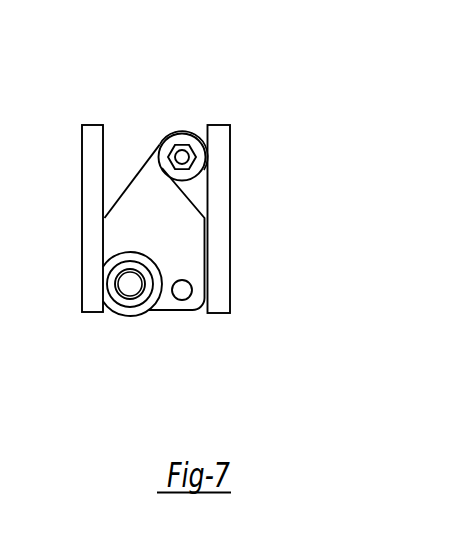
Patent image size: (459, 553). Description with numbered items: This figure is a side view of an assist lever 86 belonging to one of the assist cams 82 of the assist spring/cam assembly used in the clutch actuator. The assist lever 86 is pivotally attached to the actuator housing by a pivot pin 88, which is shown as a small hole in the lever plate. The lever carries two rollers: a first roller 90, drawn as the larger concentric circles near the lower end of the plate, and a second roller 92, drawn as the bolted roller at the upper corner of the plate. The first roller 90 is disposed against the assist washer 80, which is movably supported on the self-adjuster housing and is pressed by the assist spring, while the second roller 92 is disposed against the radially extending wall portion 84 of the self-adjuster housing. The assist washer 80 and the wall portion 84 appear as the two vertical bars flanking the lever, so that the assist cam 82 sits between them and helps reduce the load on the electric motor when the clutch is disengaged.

The assist washer 80 is at (96, 267).
The assist cam 82 is at (156, 229).
The radially extending wall portion 84 is at (228, 160).
The assist lever 86 is at (142, 198).
The pivot pin 88 is at (182, 290).
The first roller 90 is at (135, 292).
The second roller 92 is at (182, 134).